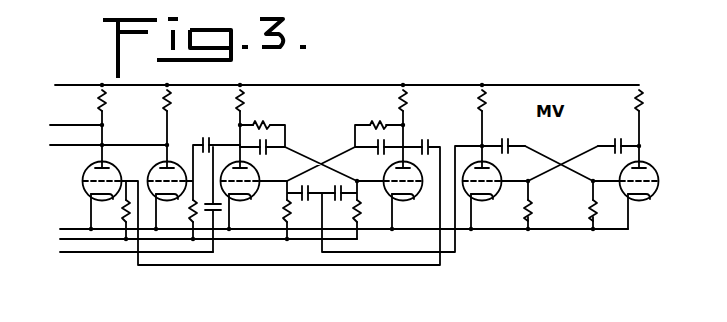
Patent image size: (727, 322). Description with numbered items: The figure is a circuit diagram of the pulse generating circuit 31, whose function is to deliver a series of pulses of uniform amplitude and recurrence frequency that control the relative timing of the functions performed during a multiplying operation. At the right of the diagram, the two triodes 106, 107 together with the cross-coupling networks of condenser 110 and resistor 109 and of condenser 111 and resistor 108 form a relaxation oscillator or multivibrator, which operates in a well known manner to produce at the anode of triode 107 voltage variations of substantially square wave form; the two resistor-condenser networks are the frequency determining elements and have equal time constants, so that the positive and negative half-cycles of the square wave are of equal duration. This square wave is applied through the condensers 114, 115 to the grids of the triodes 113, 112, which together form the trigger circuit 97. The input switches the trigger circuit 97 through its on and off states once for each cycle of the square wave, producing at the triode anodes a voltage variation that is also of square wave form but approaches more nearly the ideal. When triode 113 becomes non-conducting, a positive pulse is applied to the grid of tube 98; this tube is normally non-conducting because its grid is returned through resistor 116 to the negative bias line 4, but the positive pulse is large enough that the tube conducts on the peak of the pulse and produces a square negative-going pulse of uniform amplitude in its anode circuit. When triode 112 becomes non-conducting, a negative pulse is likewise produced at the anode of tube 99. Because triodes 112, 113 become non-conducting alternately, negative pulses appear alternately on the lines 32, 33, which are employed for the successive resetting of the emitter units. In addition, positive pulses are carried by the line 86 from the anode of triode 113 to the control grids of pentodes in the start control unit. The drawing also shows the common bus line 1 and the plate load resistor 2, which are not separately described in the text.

The cathode bus line 1 is at (344, 219).
The plate load resistor 2 is at (92, 89).
The negative bias line 4 is at (61, 239).
The pulse generating circuit 31 is at (346, 78).
The line 32 is at (70, 125).
The line 33 is at (74, 146).
The line 86 is at (80, 253).
The trigger circuit 97 is at (321, 147).
The tube 98 is at (158, 164).
The tube 99 is at (84, 178).
The triode 106 is at (648, 192).
The triode 107 is at (490, 192).
The resistor 108 is at (548, 205).
The resistor 109 is at (578, 205).
The condenser 110 is at (518, 140).
The condenser 111 is at (626, 140).
The triode 112 is at (409, 192).
The triode 113 is at (248, 192).
The condenser 114 is at (303, 211).
The condenser 115 is at (341, 209).
The resistor 116 is at (179, 220).